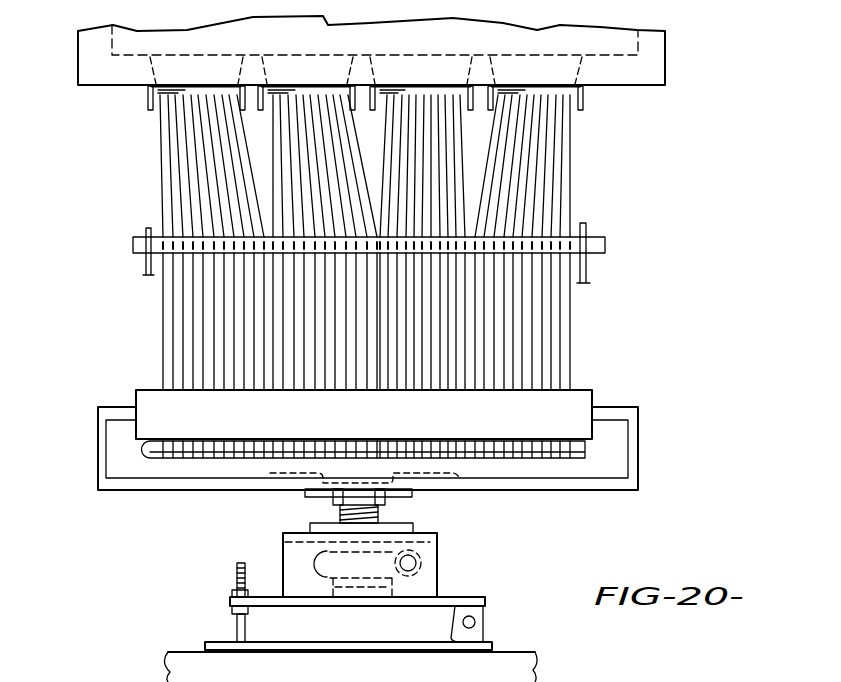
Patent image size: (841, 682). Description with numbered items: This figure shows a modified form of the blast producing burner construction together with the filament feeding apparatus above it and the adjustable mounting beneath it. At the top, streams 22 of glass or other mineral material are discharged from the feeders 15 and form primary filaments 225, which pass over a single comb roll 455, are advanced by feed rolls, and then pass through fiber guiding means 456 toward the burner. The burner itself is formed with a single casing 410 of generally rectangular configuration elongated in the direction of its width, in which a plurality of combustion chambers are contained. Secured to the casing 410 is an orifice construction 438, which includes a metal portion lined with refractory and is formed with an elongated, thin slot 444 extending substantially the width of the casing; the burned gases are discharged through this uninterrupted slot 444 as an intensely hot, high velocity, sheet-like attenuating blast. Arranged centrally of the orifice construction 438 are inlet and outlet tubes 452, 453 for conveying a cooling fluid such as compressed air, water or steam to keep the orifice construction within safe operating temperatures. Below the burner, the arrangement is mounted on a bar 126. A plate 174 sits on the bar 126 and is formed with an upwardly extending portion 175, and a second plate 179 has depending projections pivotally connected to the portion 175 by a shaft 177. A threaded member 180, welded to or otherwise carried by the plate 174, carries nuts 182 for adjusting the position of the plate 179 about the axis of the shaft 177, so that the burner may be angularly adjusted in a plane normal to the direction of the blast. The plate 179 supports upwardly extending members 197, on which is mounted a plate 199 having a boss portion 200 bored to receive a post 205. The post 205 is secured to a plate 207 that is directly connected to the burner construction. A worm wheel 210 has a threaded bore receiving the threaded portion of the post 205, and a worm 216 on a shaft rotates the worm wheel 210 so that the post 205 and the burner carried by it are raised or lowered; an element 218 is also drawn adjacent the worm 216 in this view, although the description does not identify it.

The feeders 15 is at (590, 92).
The streams of glass or other mineral material 22 is at (545, 157).
The comb roll 455 is at (568, 239).
The primary filaments 225 is at (533, 322).
The fiber guiding means 456 is at (581, 391).
The orifice construction 438 is at (632, 431).
The burner casing 410 is at (640, 458).
The slot 444 is at (585, 455).
The outlet tube 453 is at (338, 500).
The inlet tube 452 is at (382, 500).
The plate 207 is at (412, 497).
The post 205 is at (413, 520).
The boss portion 200 is at (315, 528).
The plate 199 is at (437, 540).
The upwardly extending members 197 is at (437, 553).
The worm wheel 210 is at (318, 560).
The worm 216 is at (425, 566).
The bushing 218 is at (415, 574).
The nuts 182 is at (232, 607).
The threaded member 180 is at (237, 630).
The second plate 179 is at (273, 605).
The plate 174 is at (410, 646).
The shaft 177 is at (475, 620).
The upwardly extending portion 175 is at (487, 630).
The bar 126 is at (535, 660).